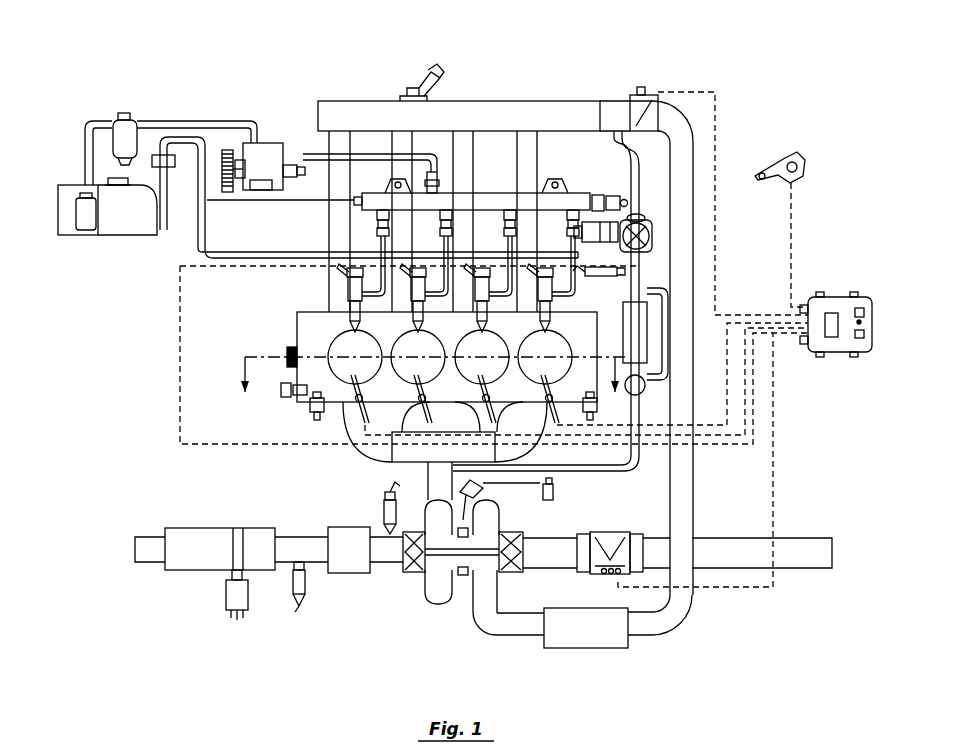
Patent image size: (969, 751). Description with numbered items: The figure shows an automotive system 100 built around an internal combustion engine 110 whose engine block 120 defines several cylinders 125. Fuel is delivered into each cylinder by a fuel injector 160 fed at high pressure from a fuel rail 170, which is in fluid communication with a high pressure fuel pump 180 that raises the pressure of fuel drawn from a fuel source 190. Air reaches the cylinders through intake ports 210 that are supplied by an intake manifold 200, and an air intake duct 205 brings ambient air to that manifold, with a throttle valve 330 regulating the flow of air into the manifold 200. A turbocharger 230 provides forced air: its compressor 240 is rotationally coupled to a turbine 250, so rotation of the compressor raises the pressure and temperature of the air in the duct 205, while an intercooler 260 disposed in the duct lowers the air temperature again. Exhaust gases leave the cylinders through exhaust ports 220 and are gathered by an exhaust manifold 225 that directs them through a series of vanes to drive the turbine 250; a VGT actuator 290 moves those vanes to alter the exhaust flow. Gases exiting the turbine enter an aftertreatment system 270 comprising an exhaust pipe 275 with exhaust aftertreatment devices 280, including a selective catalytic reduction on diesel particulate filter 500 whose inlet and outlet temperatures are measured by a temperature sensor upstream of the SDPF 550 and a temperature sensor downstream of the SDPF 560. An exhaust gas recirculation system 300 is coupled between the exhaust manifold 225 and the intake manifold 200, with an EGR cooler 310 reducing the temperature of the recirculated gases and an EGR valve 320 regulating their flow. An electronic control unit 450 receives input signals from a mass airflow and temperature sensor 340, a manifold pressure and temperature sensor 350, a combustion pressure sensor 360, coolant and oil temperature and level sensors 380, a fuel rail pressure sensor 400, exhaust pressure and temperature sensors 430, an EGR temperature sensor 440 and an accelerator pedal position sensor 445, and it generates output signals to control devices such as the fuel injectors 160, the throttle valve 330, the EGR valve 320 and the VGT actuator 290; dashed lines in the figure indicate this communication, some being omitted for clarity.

The automotive system 100 is at (238, 88).
The internal combustion engine 110 is at (556, 87).
The engine block 120 is at (297, 320).
The cylinder 125 is at (578, 328).
The fuel injector 160 is at (354, 293).
The fuel rail 170 is at (384, 202).
The high pressure fuel pump 180 is at (268, 142).
The fuel source 190 is at (128, 218).
The intake manifold 200 is at (469, 118).
The air intake duct 205 is at (685, 511).
The intake port 210 is at (343, 315).
The exhaust port 220 is at (352, 404).
The exhaust manifold 225 is at (417, 456).
The turbocharger 230 is at (433, 613).
The compressor 240 is at (490, 576).
The turbine 250 is at (435, 573).
The intercooler 260 is at (610, 634).
The aftertreatment system 270 is at (205, 518).
The exhaust pipe 275 is at (147, 552).
The exhaust aftertreatment device 280 is at (231, 607).
The VGT actuator 290 is at (487, 490).
The exhaust gas recirculation system 300 is at (606, 478).
The EGR cooler 310 is at (635, 345).
The EGR valve 320 is at (642, 214).
The throttle valve 330 is at (645, 87).
The mass airflow and temperature sensor 340 is at (590, 572).
The manifold pressure and temperature sensor 350 is at (410, 89).
The combustion pressure sensor 360 is at (365, 414).
The coolant and oil temperature and level sensors 380 is at (309, 396).
The fuel rail pressure sensor 400 is at (621, 197).
The exhaust pressure and temperature sensors 430 is at (237, 621).
The EGR temperature sensor 440 is at (634, 262).
The accelerator pedal position sensor 445 is at (794, 158).
The electronic control unit 450 is at (840, 297).
The selective catalytic reduction on diesel particulate filter 500 is at (346, 556).
The temperature sensor upstream of the SDPF 550 is at (386, 532).
The temperature sensor downstream of the SDPF 560 is at (300, 602).